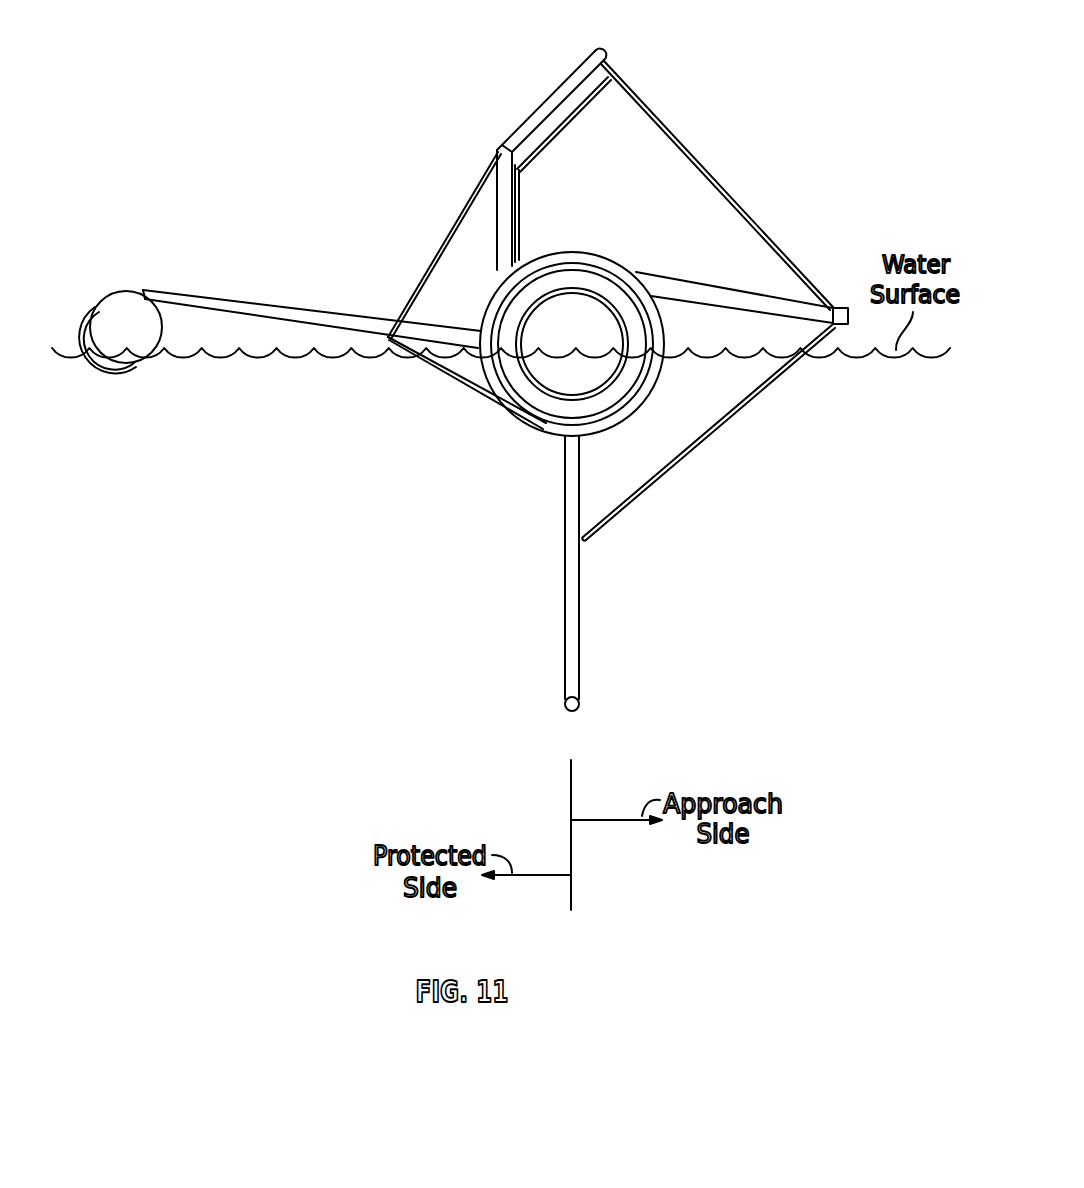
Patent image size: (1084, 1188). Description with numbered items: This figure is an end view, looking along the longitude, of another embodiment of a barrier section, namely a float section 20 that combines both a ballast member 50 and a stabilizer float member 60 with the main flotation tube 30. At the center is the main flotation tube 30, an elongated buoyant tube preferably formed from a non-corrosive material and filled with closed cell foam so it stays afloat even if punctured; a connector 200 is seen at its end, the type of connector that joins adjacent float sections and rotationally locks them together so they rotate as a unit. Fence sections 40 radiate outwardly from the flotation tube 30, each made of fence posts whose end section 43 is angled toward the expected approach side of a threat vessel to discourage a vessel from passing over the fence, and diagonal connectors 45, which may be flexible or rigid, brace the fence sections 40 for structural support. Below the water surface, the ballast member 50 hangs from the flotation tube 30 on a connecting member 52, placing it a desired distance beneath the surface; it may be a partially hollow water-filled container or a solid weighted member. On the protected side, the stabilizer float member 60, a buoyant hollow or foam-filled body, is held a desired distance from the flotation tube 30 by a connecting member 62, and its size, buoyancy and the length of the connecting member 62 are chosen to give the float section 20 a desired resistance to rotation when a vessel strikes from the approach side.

The float section 20 is at (716, 82).
The main flotation tube 30 is at (557, 336).
The fence section 40 is at (464, 140).
The end section 43 is at (586, 61).
The diagonal connector 45 is at (437, 248).
The ballast member 50 is at (579, 703).
The connecting member 52 is at (580, 580).
The stabilizer float member 60 is at (108, 305).
The connecting member 62 is at (200, 301).
The connector 200 is at (561, 400).